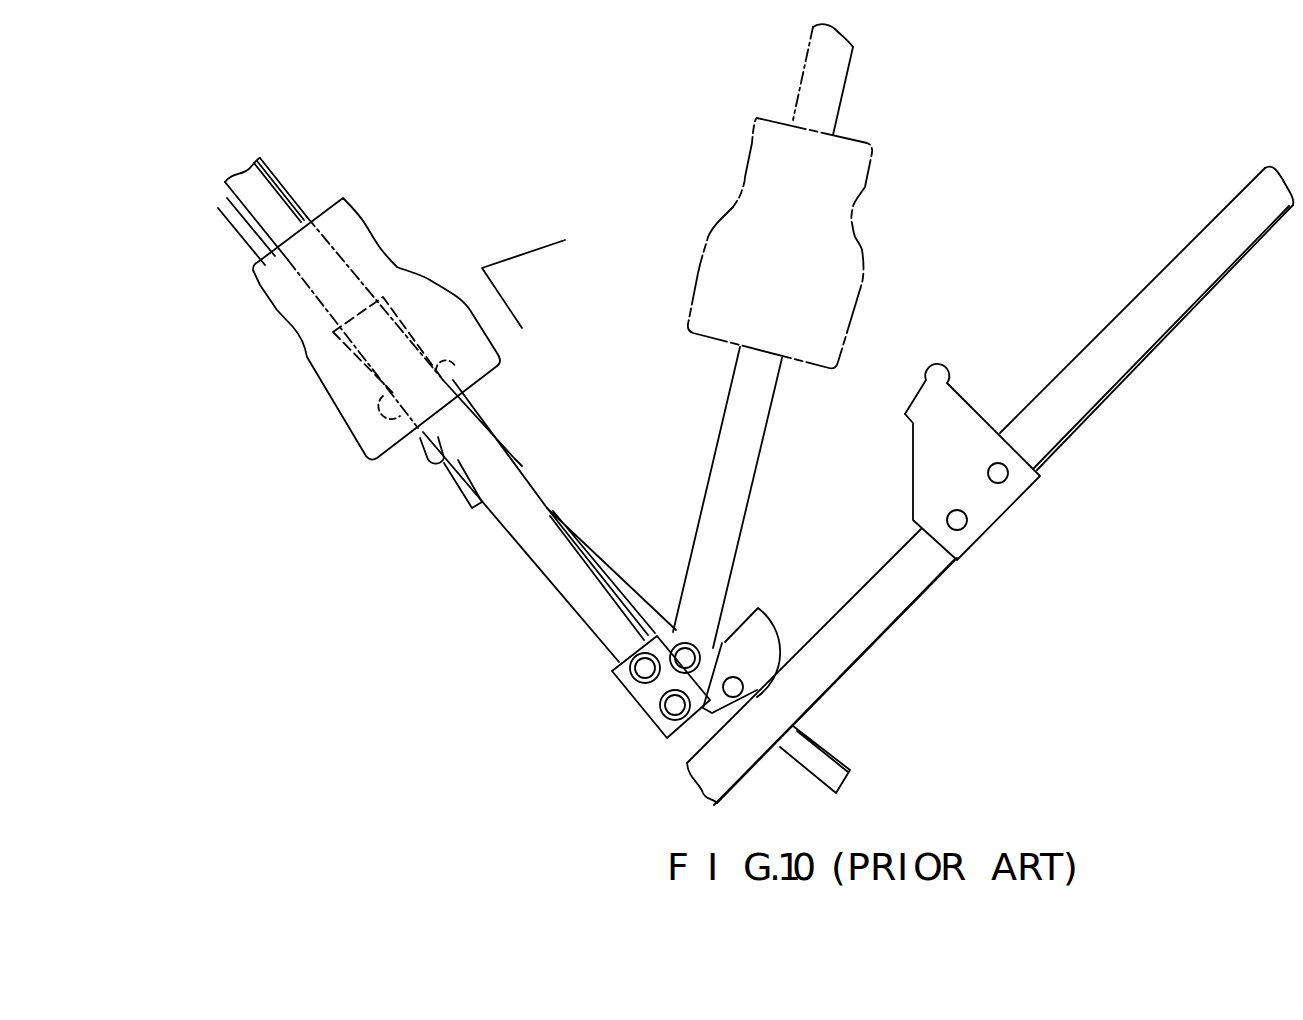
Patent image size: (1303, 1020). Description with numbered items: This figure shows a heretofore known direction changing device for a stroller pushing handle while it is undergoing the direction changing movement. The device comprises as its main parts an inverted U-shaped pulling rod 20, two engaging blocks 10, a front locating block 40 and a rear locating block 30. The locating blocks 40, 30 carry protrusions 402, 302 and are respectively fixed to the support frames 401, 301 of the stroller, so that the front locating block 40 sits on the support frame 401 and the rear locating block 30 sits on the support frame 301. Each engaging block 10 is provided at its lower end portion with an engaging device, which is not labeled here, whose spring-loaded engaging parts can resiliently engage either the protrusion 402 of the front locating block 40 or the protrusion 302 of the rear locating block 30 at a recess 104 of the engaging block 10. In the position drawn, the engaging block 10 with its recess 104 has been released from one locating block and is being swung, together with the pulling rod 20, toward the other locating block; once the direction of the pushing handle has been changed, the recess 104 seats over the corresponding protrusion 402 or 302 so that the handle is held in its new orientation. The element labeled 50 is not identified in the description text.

The engaging block 10 is at (397, 247).
The inverted U-shaped pulling rod 20 is at (248, 235).
The rear locating block 30 is at (465, 492).
The support frame 301 is at (273, 200).
The protrusion 302 is at (423, 445).
The recess 104 is at (380, 404).
The front locating block 40 is at (985, 510).
The support frame 401 is at (1103, 373).
The protrusion 402 is at (921, 399).
The rod 50 is at (820, 100).